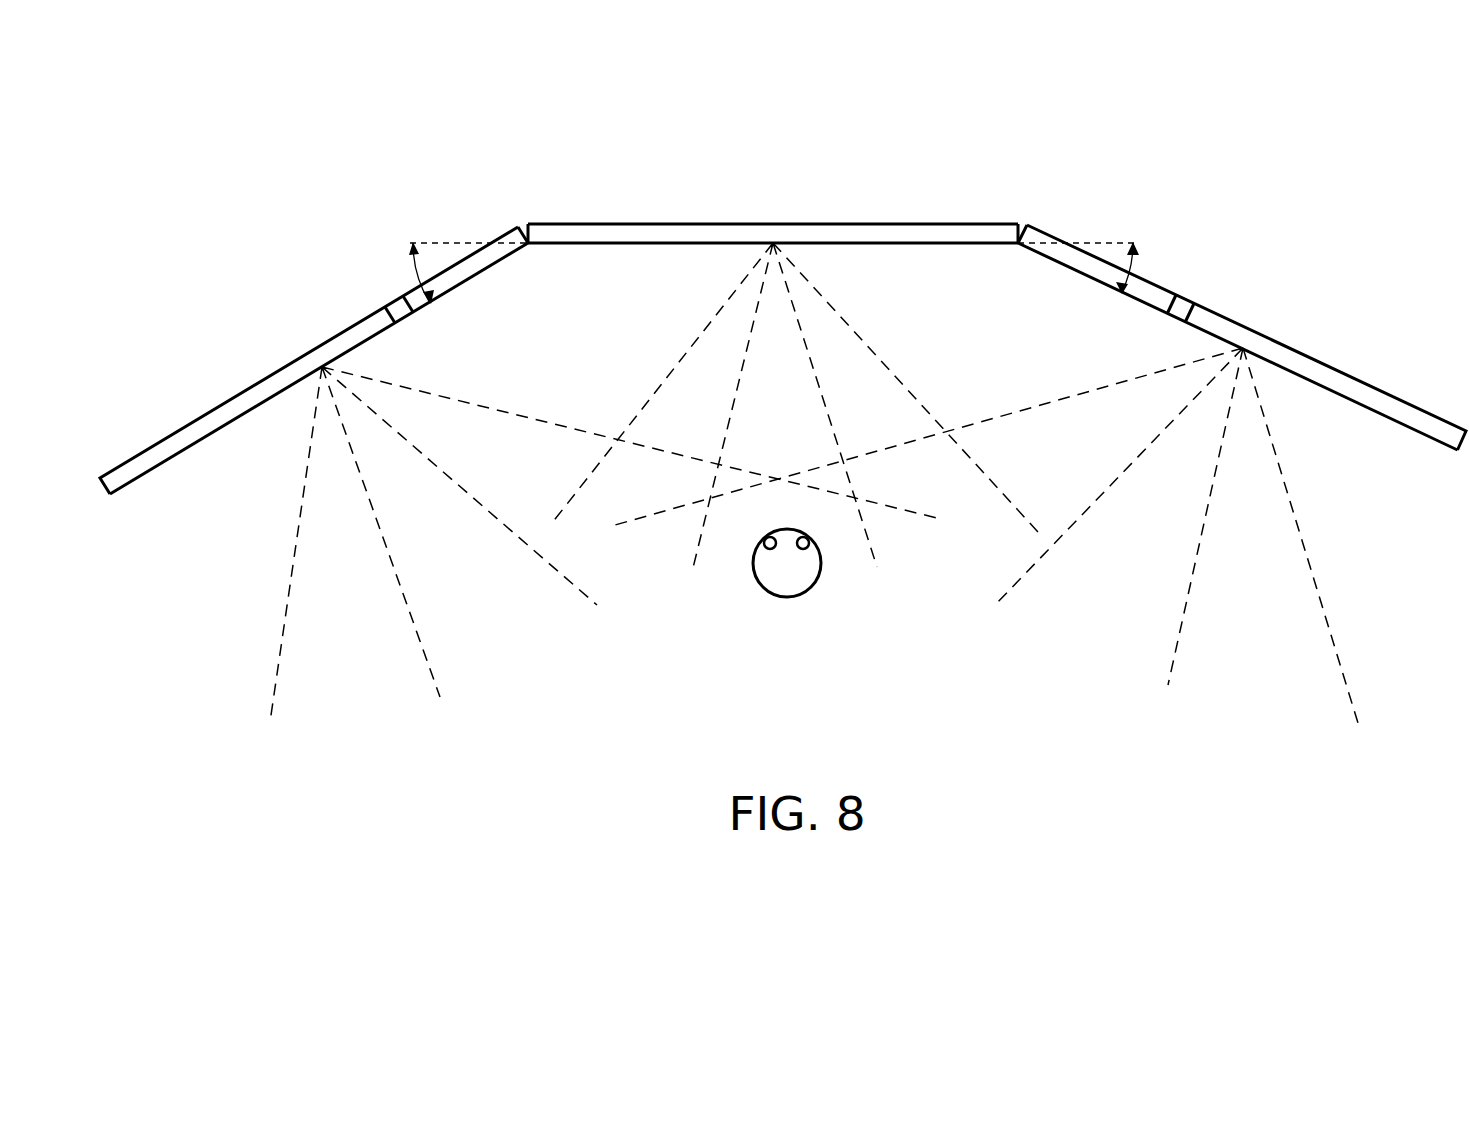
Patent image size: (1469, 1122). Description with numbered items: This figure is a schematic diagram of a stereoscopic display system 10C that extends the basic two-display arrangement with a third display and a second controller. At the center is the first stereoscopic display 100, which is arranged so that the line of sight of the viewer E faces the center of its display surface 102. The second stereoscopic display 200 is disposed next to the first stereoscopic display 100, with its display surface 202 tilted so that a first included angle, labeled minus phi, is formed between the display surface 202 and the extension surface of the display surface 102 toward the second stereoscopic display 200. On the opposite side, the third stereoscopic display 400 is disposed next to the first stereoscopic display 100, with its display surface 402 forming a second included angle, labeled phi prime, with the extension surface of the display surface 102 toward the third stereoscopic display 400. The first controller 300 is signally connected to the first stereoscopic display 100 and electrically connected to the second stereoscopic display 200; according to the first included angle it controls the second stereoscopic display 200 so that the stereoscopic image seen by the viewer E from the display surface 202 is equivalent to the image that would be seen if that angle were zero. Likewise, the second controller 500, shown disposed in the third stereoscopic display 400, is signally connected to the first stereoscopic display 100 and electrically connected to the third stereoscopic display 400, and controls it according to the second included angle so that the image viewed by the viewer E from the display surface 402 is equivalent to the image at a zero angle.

The stereoscopic display system 10C is at (783, 466).
The first stereoscopic display 100 is at (773, 206).
The display surface 102 is at (878, 240).
The second stereoscopic display 200 is at (1242, 337).
The display surface 202 is at (1375, 404).
The first controller 300 is at (1178, 320).
The third stereoscopic display 400 is at (314, 360).
The display surface 402 is at (176, 448).
The second controller 500 is at (402, 326).
The viewer E is at (787, 597).